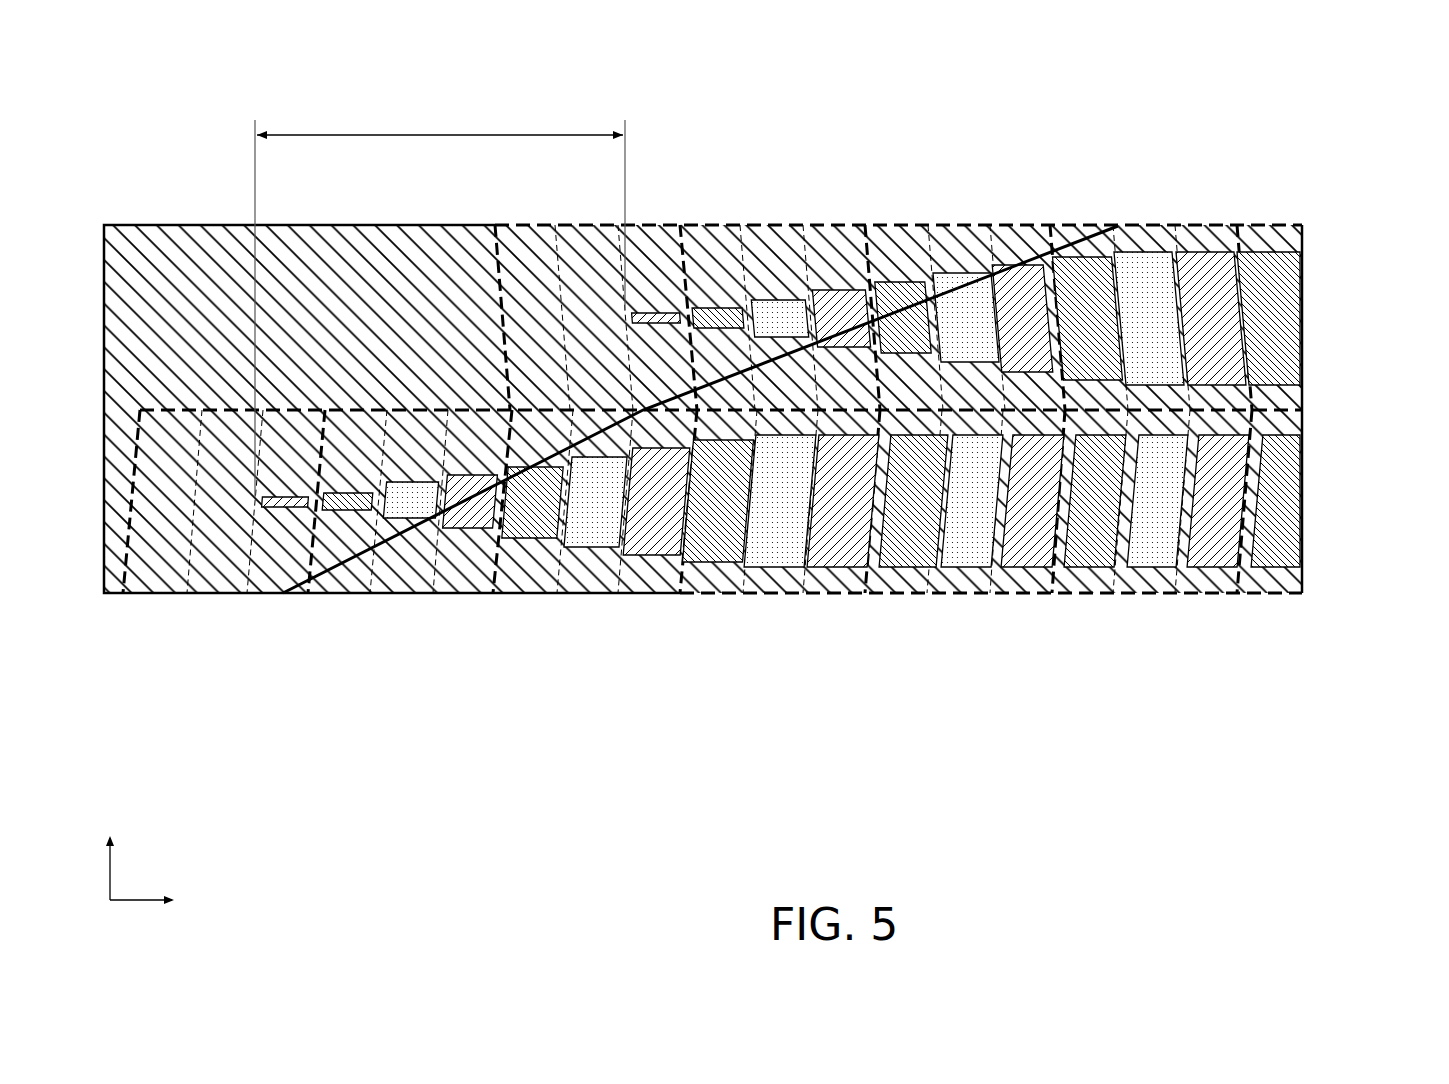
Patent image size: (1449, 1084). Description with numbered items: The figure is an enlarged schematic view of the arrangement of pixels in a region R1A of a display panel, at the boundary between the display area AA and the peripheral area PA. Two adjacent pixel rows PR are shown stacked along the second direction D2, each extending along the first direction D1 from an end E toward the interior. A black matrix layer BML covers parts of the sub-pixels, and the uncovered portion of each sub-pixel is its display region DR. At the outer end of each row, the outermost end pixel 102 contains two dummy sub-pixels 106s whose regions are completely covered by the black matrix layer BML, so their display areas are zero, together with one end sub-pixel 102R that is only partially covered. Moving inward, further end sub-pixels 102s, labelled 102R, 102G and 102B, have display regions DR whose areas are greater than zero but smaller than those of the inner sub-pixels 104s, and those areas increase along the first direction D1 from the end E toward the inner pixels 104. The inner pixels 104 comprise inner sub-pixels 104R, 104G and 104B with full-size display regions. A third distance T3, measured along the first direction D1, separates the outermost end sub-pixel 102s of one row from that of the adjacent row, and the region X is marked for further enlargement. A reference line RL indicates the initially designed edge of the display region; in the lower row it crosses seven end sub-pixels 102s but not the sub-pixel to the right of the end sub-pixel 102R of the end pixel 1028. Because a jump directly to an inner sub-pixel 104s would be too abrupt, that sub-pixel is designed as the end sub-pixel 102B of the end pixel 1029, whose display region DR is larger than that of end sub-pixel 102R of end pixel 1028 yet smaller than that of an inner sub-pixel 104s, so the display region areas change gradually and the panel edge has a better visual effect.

The end pixel 102 is at (490, 282).
The end sub-pixel 102s is at (665, 227).
The dummy sub-pixel 106s is at (522, 227).
The inner sub-pixel 104s is at (1197, 225).
The end sub-pixel (red) 102R is at (270, 593).
The end sub-pixel (green) 102G is at (585, 593).
The end sub-pixel (blue) 102B is at (520, 593).
The inner sub-pixel (red) 104R is at (830, 593).
The inner sub-pixel (green) 104G is at (770, 593).
The inner sub-pixel (blue) 104B is at (1080, 593).
The inner pixel 104 is at (1275, 660).
The end pixel 1028 is at (668, 720).
The end pixel 1029 is at (920, 708).
The third distance T3 is at (440, 299).
The region X is at (802, 113).
The peripheral area PA is at (146, 225).
The display area AA is at (1270, 222).
The black matrix layer BML is at (225, 226).
The display region DR is at (783, 300).
The reference line RL is at (1083, 225).
The region R1A is at (1243, 110).
The pixel row PR is at (1332, 304).
The end of pixel row E is at (120, 412).
The first direction D1 is at (158, 875).
The second direction D2 is at (107, 816).